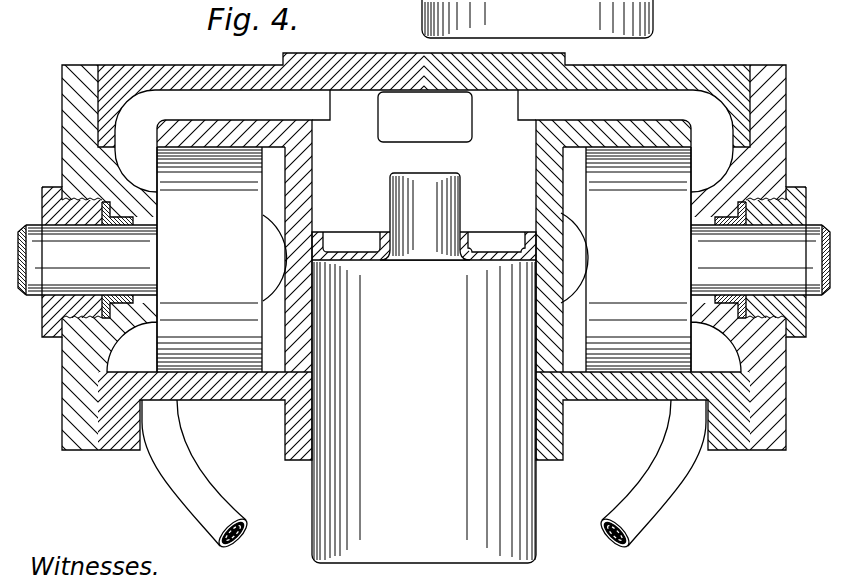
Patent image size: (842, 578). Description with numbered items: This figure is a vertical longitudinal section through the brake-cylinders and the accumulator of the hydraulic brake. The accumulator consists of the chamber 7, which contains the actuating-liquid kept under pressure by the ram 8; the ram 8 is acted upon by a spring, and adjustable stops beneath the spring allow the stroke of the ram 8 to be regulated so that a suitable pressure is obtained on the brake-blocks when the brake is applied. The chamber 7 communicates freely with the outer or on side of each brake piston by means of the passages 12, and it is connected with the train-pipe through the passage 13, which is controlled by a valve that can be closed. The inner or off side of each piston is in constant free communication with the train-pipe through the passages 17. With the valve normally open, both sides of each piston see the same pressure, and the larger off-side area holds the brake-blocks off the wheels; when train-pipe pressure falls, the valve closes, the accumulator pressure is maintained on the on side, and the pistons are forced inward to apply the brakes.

The chamber 7 is at (424, 209).
The ram 8 is at (424, 411).
The passages 12 is at (424, 141).
The passage 13 is at (425, 117).
The passages 17 is at (424, 259).